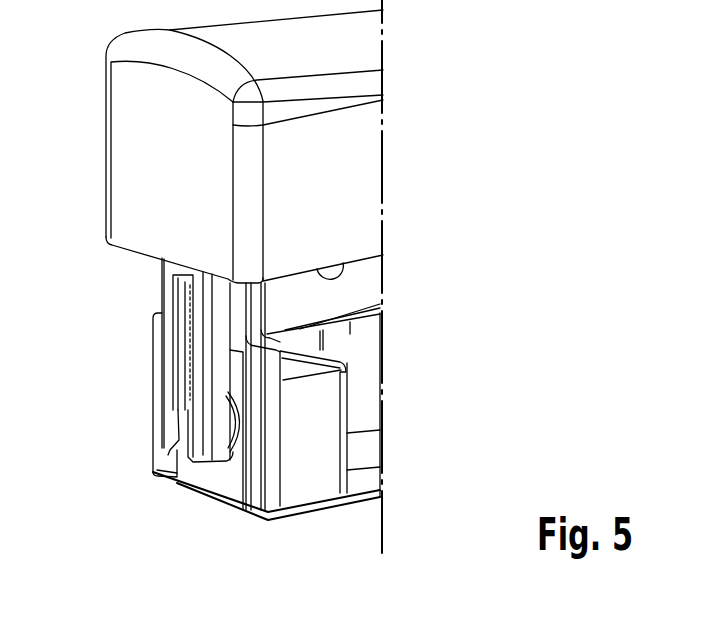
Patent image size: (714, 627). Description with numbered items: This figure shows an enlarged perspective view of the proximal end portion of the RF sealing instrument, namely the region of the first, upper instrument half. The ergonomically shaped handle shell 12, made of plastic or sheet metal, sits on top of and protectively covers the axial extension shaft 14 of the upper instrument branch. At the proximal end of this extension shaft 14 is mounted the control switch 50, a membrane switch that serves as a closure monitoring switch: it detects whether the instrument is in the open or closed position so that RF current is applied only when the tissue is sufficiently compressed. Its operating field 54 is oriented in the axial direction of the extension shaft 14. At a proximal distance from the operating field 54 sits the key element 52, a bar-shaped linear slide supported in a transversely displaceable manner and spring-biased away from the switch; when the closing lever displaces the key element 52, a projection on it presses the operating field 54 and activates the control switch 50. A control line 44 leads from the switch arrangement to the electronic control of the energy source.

The handle shell 12 is at (345, 183).
The extension shaft 14 is at (345, 300).
The control line 44 is at (316, 514).
The control switch 50 is at (438, 372).
The key element 52 is at (162, 288).
The operating field 54 is at (217, 418).